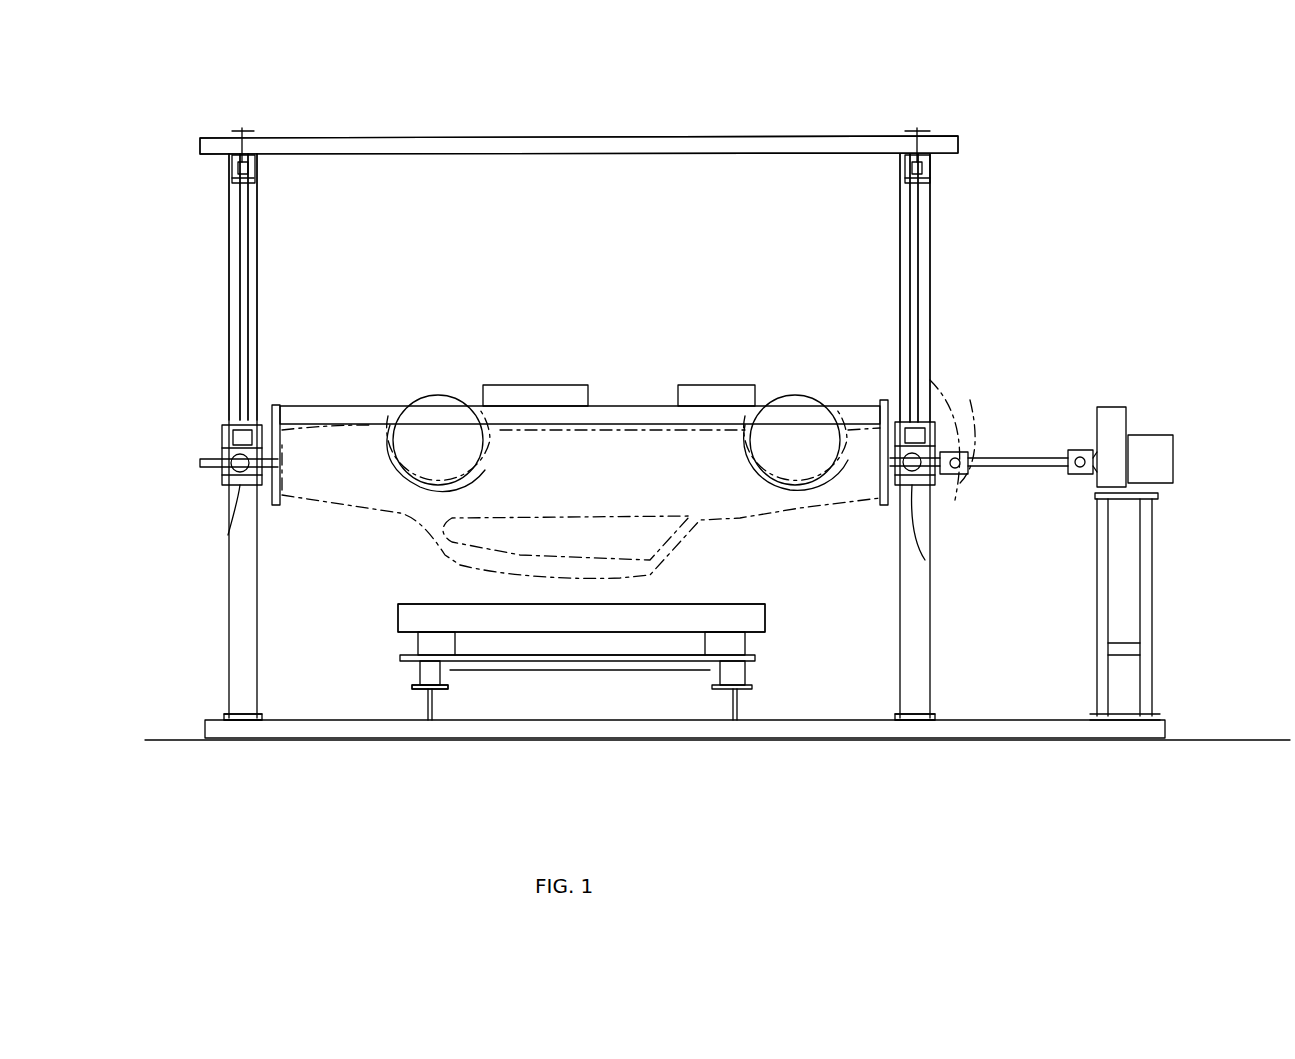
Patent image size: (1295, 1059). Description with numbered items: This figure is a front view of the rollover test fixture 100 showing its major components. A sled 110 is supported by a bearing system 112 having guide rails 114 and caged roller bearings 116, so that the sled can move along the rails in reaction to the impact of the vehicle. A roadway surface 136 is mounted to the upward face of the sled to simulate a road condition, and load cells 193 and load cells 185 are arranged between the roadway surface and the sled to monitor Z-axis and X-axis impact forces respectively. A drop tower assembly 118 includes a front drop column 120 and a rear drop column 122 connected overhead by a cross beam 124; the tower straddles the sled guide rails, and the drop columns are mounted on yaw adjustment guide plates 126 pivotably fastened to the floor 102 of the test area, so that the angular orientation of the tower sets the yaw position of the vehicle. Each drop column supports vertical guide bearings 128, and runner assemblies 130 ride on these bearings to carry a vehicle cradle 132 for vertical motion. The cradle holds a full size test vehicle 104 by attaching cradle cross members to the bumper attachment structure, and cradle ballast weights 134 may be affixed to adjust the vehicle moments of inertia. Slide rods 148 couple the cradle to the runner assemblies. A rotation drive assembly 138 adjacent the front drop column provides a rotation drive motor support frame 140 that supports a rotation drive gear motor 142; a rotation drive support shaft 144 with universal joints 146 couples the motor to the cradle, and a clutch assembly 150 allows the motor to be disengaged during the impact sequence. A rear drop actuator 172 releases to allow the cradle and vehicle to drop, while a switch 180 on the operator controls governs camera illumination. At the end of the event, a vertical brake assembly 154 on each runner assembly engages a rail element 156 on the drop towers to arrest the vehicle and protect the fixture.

The test fixture 100 is at (955, 186).
The floor 102 is at (1218, 738).
The test vehicle 104 is at (606, 478).
The sled 110 is at (752, 655).
The bearing system 112 is at (415, 690).
The guide rails 114 is at (760, 690).
The caged roller bearings 116 is at (420, 680).
The drop tower assembly 118 is at (632, 122).
The front drop column 120 is at (933, 250).
The rear drop column 122 is at (225, 300).
The cross beam 124 is at (442, 137).
The yaw adjustment guide plates 126 is at (250, 730).
The vertical guide bearings 128 is at (262, 378).
The runner assemblies 130 is at (240, 485).
The vehicle cradle 132 is at (622, 406).
The cradle ballast weights 134 is at (580, 385).
The roadway surface 136 is at (670, 600).
The rotation drive assembly 138 is at (1158, 572).
The rotation drive motor support frame 140 is at (1152, 640).
The rotation drive gear motor 142 is at (1148, 435).
The rotation drive support shaft 144 is at (1035, 472).
The universal joints 146 is at (958, 455).
The slide rods 148 is at (220, 460).
The clutch assembly 150 is at (1112, 407).
The vertical brake assembly 154 is at (222, 418).
The rail element 156 is at (243, 246).
The rear drop actuator 172 is at (232, 166).
The switch 180 is at (928, 165).
The load cells 185 is at (430, 640).
The load cells 193 is at (725, 636).